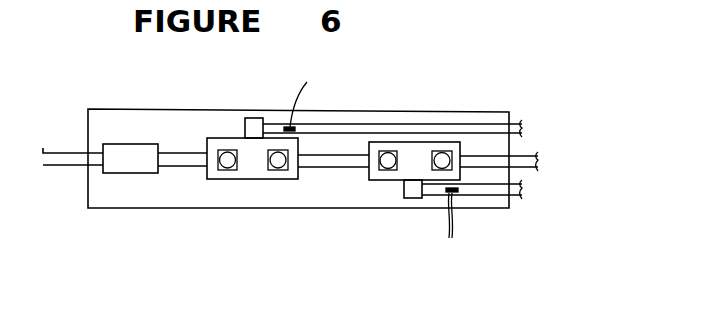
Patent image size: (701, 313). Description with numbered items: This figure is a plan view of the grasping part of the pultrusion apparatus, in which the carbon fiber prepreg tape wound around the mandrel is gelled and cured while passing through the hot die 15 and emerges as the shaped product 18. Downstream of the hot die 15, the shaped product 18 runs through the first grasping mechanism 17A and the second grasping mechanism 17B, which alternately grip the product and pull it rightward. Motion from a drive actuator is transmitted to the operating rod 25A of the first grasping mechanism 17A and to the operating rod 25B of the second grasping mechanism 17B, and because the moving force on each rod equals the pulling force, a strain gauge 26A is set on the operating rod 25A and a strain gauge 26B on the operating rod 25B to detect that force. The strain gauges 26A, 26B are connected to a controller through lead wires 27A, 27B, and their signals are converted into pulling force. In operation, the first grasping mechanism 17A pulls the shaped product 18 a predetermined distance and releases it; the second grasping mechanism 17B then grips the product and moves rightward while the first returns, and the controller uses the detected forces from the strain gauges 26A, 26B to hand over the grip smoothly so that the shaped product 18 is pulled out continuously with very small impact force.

The hot die 15 is at (130, 158).
The shaped product 18 is at (177, 160).
The first grasping mechanism 17A is at (252, 166).
The second grasping mechanism 17B is at (385, 176).
The operating rod 25A is at (393, 130).
The operating rod 25B is at (493, 194).
The strain gauge 26A is at (308, 123).
The strain gauge 26B is at (447, 191).
The lead wire 27A is at (292, 122).
The lead wire 27B is at (454, 215).